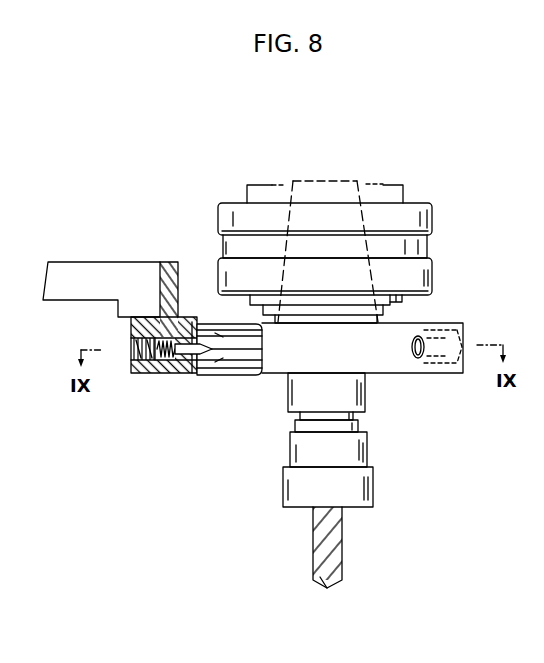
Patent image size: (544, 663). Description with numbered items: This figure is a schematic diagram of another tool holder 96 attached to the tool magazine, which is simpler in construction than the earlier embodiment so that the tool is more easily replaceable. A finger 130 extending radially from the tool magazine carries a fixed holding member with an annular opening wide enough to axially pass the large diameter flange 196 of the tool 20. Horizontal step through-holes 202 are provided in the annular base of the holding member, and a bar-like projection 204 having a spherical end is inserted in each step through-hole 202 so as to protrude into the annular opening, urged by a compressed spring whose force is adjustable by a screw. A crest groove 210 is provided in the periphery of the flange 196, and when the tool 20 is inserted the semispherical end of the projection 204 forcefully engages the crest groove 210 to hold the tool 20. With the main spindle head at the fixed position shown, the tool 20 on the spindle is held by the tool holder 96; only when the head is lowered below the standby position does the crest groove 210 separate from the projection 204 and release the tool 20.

The tool 20 is at (380, 321).
The tool holder 96 is at (170, 397).
The finger 130 is at (100, 268).
The large diameter flange 196 is at (222, 338).
The step through-hole 202 is at (175, 376).
The bar-like projection 204 is at (191, 376).
The crest groove 210 is at (242, 352).